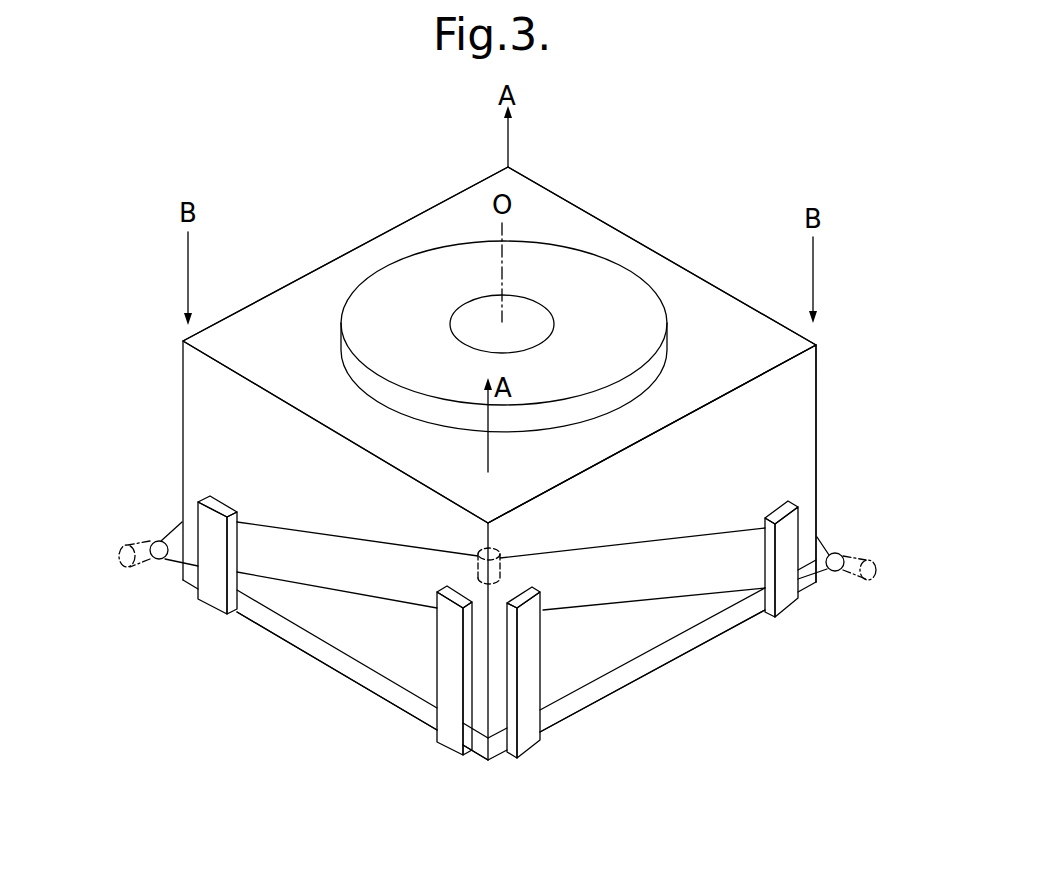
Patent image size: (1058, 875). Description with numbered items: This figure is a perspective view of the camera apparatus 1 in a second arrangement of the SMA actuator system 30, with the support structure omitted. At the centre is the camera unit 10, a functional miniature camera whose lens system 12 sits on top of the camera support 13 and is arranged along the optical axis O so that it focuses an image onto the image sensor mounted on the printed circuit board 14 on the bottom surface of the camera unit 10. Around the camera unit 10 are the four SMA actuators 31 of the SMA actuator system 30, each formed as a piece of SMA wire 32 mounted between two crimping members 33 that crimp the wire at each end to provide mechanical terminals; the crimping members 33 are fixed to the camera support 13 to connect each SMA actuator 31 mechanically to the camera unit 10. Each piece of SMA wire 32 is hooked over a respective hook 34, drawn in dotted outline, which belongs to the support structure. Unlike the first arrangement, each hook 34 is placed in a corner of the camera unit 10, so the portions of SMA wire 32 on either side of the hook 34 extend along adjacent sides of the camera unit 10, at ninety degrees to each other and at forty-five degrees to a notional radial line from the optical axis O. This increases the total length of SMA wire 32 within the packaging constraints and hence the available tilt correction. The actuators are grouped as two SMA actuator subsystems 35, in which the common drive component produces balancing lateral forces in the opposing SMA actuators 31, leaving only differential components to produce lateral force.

The camera apparatus 1 is at (148, 342).
The camera unit 10 is at (737, 448).
The lens system 12 is at (465, 315).
The camera support 13 is at (800, 414).
The printed circuit board 14 is at (686, 643).
The SMA actuator system 30 is at (156, 603).
The SMA actuator 31 is at (307, 587).
The SMA wire 32 is at (348, 593).
The crimping member 33 is at (208, 518).
The hook 34 is at (145, 538).
The SMA actuator subsystem 35 is at (324, 515).